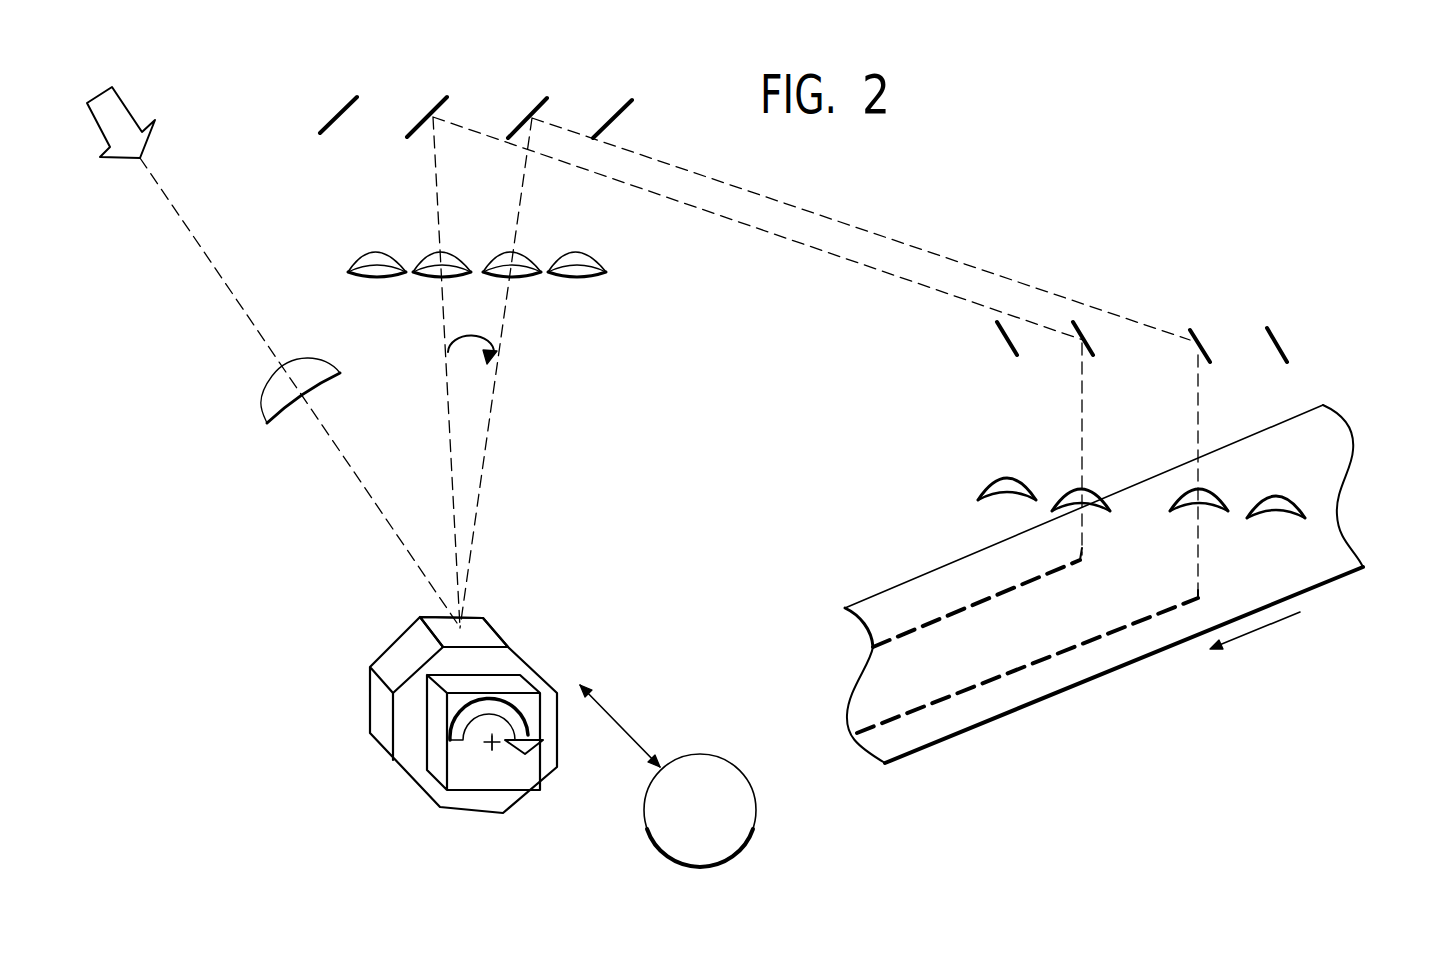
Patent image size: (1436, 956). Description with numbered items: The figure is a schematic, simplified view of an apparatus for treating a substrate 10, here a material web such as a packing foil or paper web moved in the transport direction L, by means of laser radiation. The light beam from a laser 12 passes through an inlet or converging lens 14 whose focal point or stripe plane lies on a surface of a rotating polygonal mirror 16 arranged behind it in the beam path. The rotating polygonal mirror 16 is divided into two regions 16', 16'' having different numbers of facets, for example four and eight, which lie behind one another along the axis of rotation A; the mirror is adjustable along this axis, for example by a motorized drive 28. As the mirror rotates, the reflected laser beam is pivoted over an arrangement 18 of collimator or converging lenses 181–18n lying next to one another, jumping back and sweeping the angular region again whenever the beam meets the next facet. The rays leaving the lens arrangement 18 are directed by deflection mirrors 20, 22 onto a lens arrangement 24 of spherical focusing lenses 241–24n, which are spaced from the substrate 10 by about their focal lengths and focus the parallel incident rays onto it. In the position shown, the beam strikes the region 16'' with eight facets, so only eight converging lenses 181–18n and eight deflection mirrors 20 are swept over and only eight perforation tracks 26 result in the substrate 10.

The substrate 10 is at (990, 707).
The laser 12 is at (120, 118).
The converging lens 14 is at (277, 388).
The rotating polygonal mirror 16 is at (443, 726).
The region 16' is at (510, 705).
The region 16'' is at (495, 605).
The arrangement of collimator lenses 18 is at (580, 285).
The converging lens 181 is at (378, 262).
The converging lens 18n is at (592, 264).
The deflection mirrors 20 is at (343, 102).
The deflection mirrors 22 is at (997, 330).
The lens arrangement 24 is at (983, 460).
The converging lens 241 is at (983, 490).
The converging lens 24n is at (1307, 510).
The perforation tracks 26 is at (917, 627).
The motorized drive 28 is at (730, 830).
The axis of rotation A is at (492, 750).
The transport direction L is at (1280, 618).